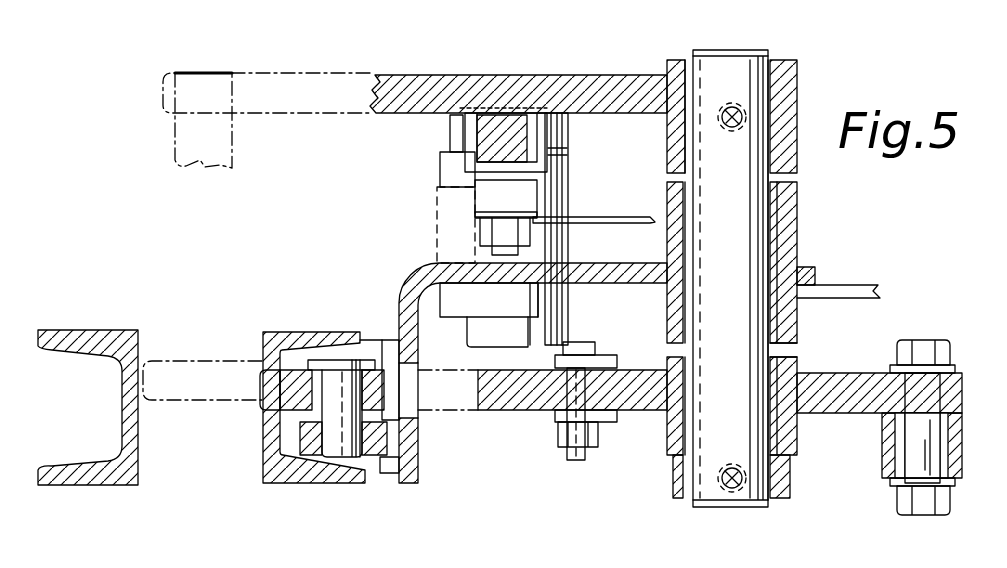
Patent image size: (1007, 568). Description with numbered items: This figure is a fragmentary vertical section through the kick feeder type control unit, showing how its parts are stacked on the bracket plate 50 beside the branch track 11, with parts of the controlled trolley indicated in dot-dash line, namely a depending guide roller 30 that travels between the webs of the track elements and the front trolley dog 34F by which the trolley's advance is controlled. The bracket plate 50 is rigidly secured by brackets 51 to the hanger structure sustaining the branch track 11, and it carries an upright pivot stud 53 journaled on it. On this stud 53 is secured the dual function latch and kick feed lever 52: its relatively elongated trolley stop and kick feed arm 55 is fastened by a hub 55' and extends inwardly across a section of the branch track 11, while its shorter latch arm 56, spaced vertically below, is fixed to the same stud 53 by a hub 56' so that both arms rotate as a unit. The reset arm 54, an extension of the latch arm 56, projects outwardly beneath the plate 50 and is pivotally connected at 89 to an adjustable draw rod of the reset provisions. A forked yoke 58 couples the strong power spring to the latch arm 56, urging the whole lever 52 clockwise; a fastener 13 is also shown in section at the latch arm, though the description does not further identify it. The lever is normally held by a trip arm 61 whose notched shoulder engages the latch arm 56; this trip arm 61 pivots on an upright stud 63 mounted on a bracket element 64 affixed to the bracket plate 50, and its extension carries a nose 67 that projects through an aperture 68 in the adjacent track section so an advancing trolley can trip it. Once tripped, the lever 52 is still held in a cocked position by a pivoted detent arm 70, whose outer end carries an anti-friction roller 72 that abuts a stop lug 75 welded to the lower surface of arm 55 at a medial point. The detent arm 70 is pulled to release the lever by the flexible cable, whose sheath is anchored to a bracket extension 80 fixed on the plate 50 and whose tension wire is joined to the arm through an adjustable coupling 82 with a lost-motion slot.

The branch track 11 is at (99, 327).
The guide roller 30 is at (195, 350).
The front trolley dog 34F is at (232, 140).
The latch and kick feed lever 52 is at (441, 62).
The trolley stop and kick feed arm 55 is at (518, 79).
The hub 55' is at (746, 265).
The stop lug 75 is at (518, 142).
The anti-friction roller 72 is at (558, 158).
The detent arm 70 is at (480, 187).
The adjustable coupling 82 is at (598, 222).
The pivot stud 53 is at (758, 225).
The bracket plate 50 is at (412, 290).
The bracket extension 80 is at (838, 290).
The trip arm 61 is at (293, 353).
The bracket 51 is at (372, 348).
The aperture 68 is at (405, 418).
The nose 67 is at (268, 402).
The upright stud 63 is at (345, 458).
The bracket element 64 is at (400, 452).
The latch arm 56 is at (572, 408).
The bolt 13 is at (590, 350).
The forked yoke 58 is at (602, 422).
The hub 56' is at (800, 318).
The reset arm 54 is at (842, 380).
The pivotal connection 89 is at (935, 450).